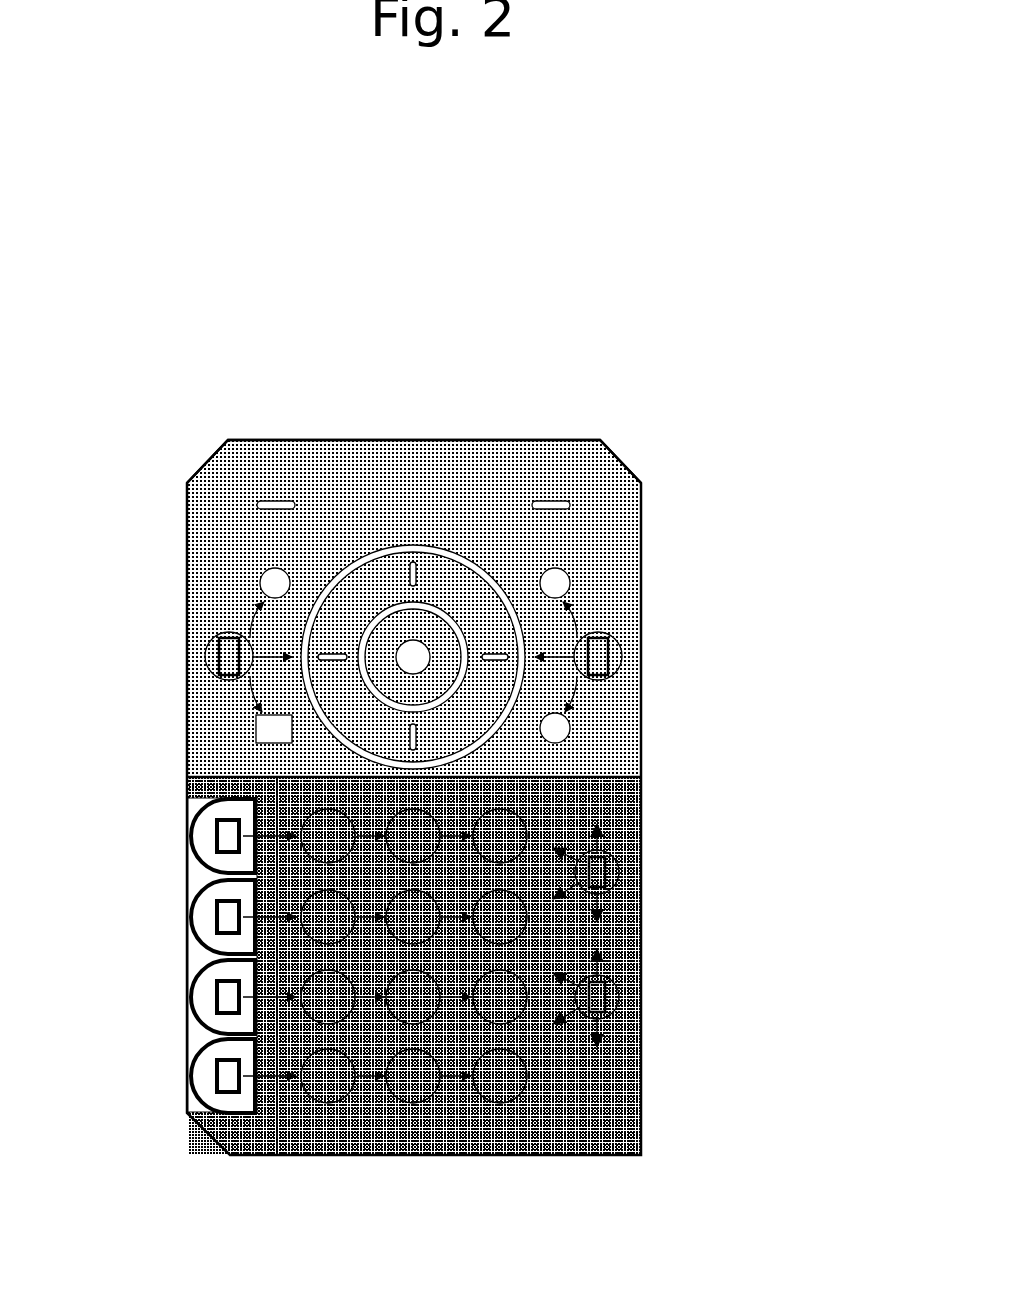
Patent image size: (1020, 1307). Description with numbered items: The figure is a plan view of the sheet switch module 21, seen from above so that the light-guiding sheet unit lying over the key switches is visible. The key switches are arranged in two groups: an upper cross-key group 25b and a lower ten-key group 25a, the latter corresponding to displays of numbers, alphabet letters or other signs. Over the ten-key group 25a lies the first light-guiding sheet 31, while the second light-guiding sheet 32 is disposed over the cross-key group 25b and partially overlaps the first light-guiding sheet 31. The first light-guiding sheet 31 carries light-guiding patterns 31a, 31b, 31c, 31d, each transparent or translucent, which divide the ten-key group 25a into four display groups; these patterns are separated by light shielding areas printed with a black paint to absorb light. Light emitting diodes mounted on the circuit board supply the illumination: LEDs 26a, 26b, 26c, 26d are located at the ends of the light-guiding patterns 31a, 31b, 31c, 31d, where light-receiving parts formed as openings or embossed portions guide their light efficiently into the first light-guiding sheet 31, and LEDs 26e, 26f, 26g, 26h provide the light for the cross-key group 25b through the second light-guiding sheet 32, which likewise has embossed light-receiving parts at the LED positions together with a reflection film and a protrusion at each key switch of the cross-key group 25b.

The sheet switch module 21 is at (581, 402).
The second light-guiding sheet 32 is at (415, 455).
The cross-key group 25b is at (718, 427).
The ten-key group 25a is at (716, 792).
The light emitting diode 26a is at (203, 836).
The light emitting diode 26b is at (203, 917).
The light emitting diode 26c is at (203, 997).
The light emitting diode 26d is at (203, 1076).
The light emitting diode 26e is at (205, 654).
The light emitting diode 26f is at (622, 650).
The light emitting diode 26g is at (641, 887).
The light emitting diode 26h is at (641, 1017).
The first light-guiding sheet 31 is at (353, 1137).
The light-guiding pattern 31a is at (641, 815).
The light-guiding pattern 31b is at (641, 952).
The light-guiding pattern 31c is at (543, 1023).
The light-guiding pattern 31d is at (448, 1102).